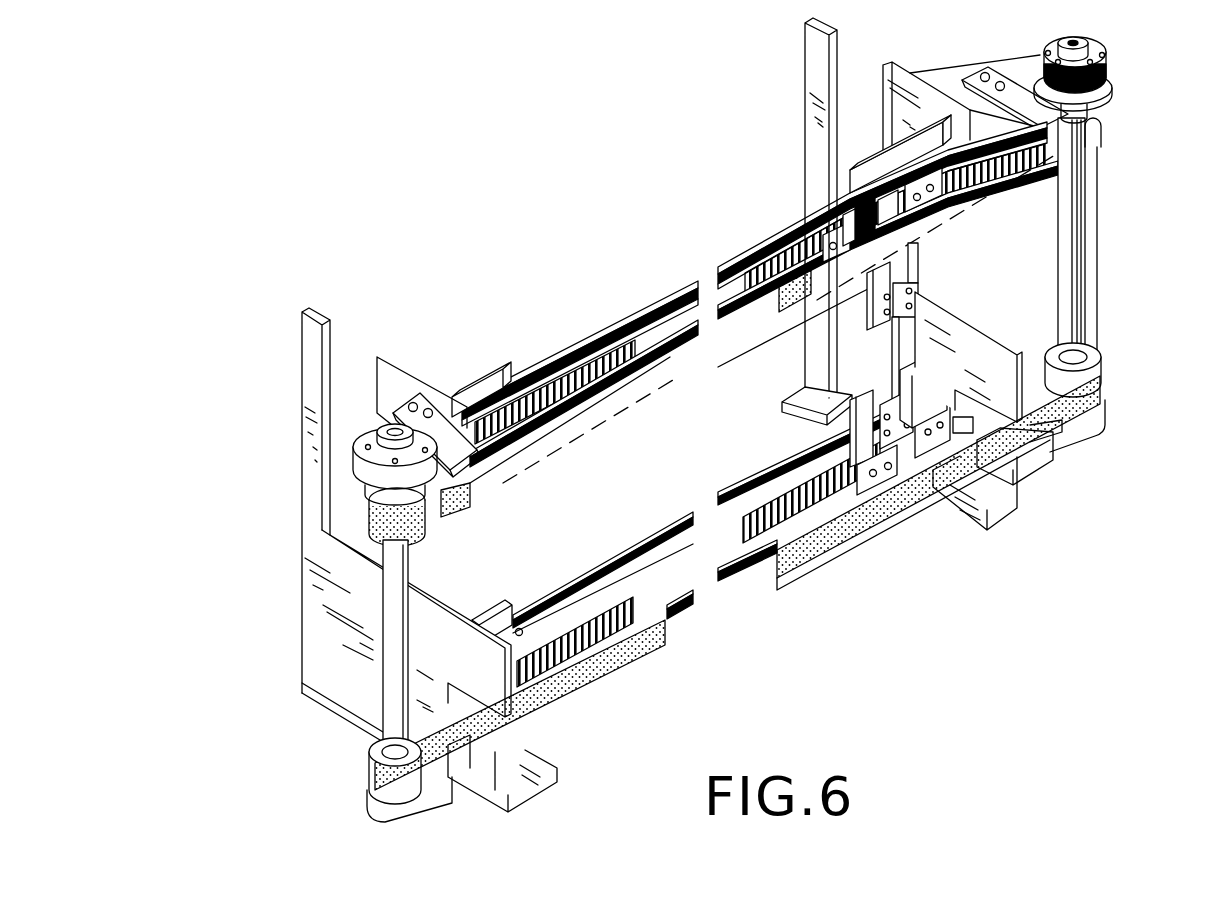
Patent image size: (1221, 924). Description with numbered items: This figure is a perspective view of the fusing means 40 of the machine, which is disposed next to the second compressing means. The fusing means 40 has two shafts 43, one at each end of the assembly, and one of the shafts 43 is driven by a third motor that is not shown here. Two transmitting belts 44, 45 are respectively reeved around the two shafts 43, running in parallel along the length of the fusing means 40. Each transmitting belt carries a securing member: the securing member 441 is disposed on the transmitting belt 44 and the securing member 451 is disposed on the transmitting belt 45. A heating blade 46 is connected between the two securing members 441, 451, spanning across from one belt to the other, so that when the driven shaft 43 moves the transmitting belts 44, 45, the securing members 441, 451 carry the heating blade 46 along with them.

The fusing means 40 is at (719, 420).
The shaft 43 is at (1085, 265).
The transmitting belt 44 is at (553, 379).
The securing member 441 is at (837, 198).
The transmitting belt 45 is at (603, 653).
The securing member 451 is at (907, 463).
The heating blade 46 is at (897, 357).